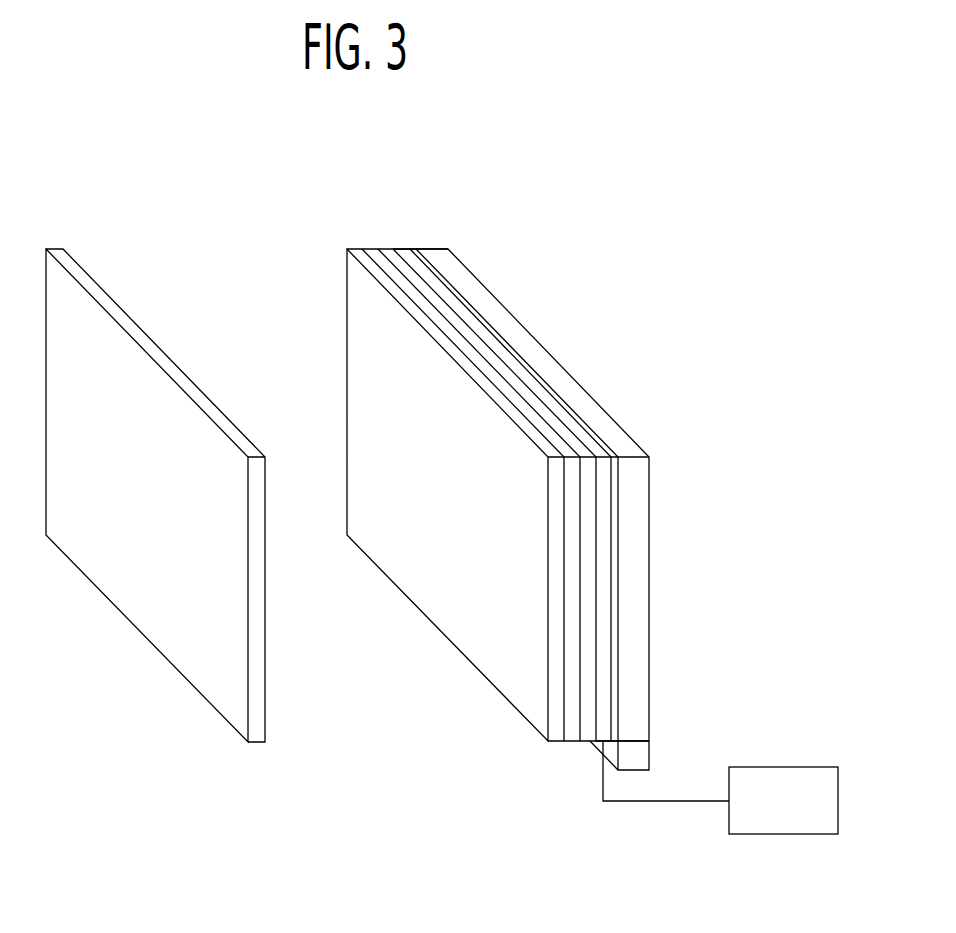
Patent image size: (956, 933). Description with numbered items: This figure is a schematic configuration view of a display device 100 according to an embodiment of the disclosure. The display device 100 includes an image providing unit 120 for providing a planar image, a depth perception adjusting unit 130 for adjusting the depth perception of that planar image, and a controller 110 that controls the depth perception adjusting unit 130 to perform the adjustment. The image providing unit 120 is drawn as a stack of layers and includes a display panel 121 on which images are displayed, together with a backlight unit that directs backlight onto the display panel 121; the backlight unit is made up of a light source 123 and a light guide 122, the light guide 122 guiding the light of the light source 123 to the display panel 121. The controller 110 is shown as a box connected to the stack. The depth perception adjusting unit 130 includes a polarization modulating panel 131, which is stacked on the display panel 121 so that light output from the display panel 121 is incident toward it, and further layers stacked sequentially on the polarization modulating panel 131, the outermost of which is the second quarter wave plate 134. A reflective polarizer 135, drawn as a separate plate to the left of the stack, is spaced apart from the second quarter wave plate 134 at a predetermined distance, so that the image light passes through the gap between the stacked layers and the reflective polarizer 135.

The display device 100 is at (592, 238).
The controller 110 is at (798, 834).
The image providing unit 120 is at (447, 243).
The display panel 121 is at (616, 520).
The light guide 122 is at (637, 585).
The light source 123 is at (600, 754).
The depth perception adjusting unit 130 is at (403, 243).
The polarization modulating panel 131 is at (603, 475).
The second quarter wave plate 134 is at (491, 657).
The reflective polarizer 135 is at (142, 613).